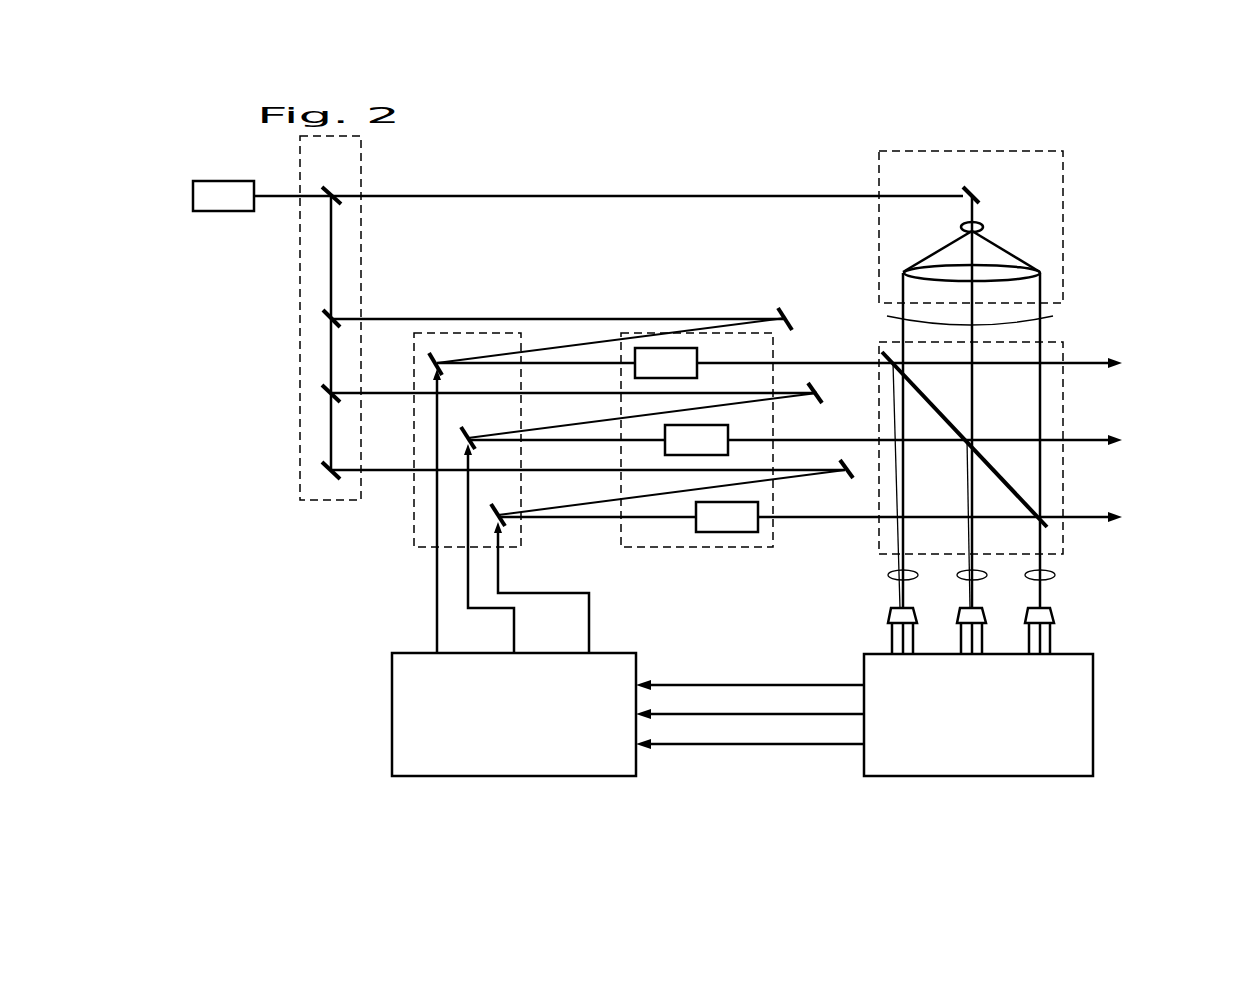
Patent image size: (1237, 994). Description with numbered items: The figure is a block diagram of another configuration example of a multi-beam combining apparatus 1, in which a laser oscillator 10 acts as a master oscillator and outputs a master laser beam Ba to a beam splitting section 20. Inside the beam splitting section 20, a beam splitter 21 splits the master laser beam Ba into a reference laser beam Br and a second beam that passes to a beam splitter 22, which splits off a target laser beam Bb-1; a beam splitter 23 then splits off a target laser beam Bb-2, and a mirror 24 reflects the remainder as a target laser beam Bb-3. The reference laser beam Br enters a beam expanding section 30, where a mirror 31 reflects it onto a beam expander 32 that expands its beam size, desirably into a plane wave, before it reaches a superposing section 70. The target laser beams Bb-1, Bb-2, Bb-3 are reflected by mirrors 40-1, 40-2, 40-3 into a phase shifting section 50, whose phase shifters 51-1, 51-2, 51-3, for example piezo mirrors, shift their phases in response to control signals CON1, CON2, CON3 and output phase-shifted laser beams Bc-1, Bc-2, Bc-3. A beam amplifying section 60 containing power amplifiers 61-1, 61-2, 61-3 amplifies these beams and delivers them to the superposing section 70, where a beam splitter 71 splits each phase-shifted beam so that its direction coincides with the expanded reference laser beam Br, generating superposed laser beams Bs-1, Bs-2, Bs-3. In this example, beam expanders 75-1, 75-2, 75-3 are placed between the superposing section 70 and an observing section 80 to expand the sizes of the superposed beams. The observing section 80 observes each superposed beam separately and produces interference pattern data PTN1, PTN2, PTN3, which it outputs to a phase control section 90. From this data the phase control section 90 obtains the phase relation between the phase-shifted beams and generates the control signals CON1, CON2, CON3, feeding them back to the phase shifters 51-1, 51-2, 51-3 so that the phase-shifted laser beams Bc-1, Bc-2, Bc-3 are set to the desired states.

The multi-beam combining apparatus 1 is at (773, 181).
The laser oscillator 10 is at (224, 181).
The beam splitting section 20 is at (362, 166).
The beam splitter 21 is at (337, 189).
The beam splitter 22 is at (326, 313).
The beam splitter 23 is at (326, 388).
The mirror 24 is at (326, 465).
The beam expanding section 30 is at (1063, 178).
The mirror 31 is at (978, 195).
The beam expander 32 is at (1050, 258).
The mirror 40-1 is at (788, 312).
The mirror 40-2 is at (815, 388).
The mirror 40-3 is at (838, 478).
The phase shifting section 50 is at (414, 517).
The phase shifter 51-1 is at (444, 356).
The phase shifter 51-2 is at (468, 432).
The phase shifter 51-3 is at (496, 507).
The beam amplifying section 60 is at (645, 548).
The amplifier 61-1 is at (688, 372).
The amplifier 61-2 is at (718, 449).
The amplifier 61-3 is at (749, 526).
The superposing section 70 is at (1063, 408).
The beam splitter 71 is at (930, 399).
The beam expander 75-1 is at (888, 614).
The beam expander 75-2 is at (962, 610).
The beam expander 75-3 is at (1058, 614).
The observing section 80 is at (1093, 715).
The phase control section 90 is at (392, 714).
The master laser beam Ba is at (286, 200).
The reference laser beam Br is at (390, 200).
The target laser beam Bb-1 is at (379, 313).
The target laser beam Bb-2 is at (379, 390).
The target laser beam Bb-3 is at (379, 468).
The phase-shifted laser beam Bc-1 is at (535, 365).
The phase-shifted laser beam Bc-2 is at (535, 442).
The phase-shifted laser beam Bc-3 is at (535, 519).
The superposed laser beam Bs-1 is at (888, 576).
The superposed laser beam Bs-2 is at (980, 577).
The superposed laser beam Bs-3 is at (1056, 577).
The control signal CON1 is at (437, 637).
The control signal CON2 is at (514, 637).
The control signal CON3 is at (589, 637).
The interference pattern data PTN1 is at (758, 683).
The interference pattern data PTN2 is at (727, 716).
The interference pattern data PTN3 is at (775, 748).